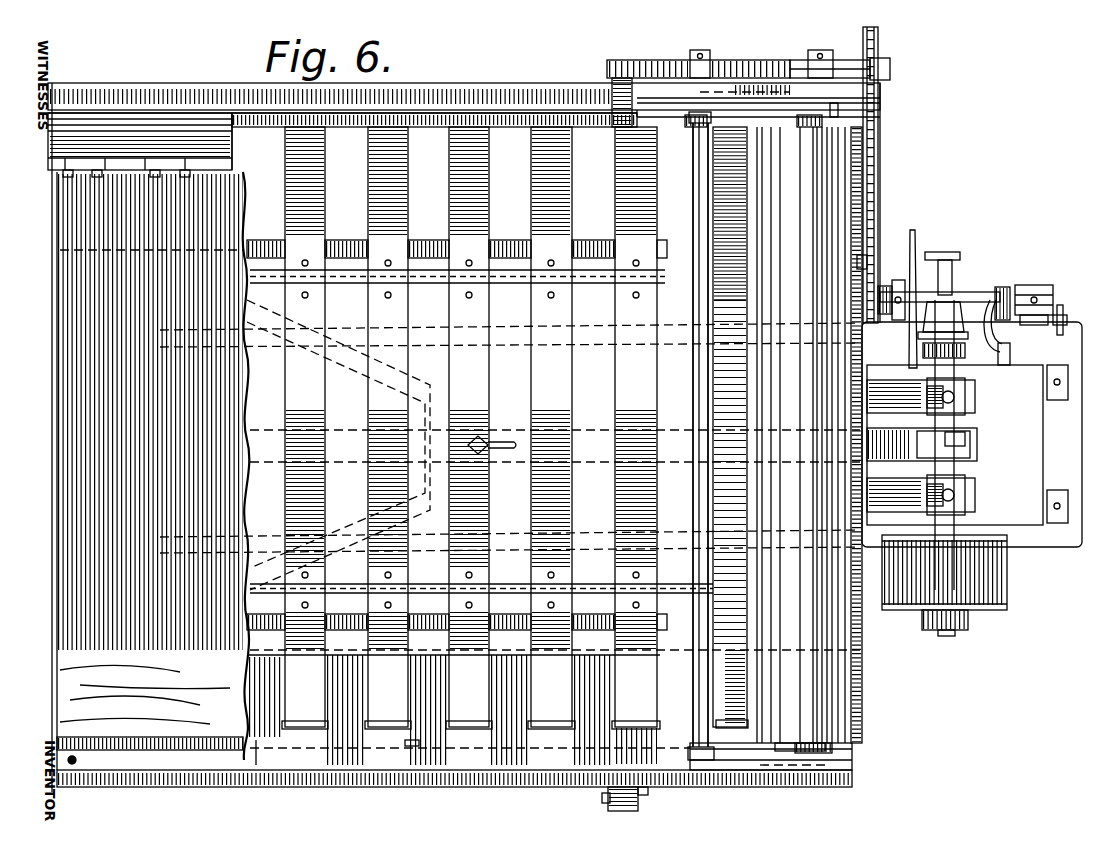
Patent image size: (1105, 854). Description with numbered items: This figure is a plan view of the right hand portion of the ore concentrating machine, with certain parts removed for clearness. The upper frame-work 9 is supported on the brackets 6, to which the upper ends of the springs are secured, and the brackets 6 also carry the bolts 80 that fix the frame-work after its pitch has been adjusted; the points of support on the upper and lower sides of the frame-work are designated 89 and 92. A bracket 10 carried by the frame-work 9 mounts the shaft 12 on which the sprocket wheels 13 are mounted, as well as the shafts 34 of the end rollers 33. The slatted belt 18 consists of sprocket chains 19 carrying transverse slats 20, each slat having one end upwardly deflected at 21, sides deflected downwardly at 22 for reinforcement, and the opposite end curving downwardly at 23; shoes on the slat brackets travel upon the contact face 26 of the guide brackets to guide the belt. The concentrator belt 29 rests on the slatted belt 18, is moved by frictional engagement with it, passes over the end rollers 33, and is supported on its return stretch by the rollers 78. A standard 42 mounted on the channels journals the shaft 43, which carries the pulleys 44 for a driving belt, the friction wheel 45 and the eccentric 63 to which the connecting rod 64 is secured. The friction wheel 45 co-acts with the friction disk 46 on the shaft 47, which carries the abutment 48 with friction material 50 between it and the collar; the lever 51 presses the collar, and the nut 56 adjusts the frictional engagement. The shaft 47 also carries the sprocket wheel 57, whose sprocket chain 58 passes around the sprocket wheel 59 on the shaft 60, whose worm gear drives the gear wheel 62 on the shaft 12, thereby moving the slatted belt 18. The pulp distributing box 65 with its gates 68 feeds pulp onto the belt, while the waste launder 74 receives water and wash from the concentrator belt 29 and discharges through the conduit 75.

The brackets 6 is at (540, 776).
The upper frame-work 9 is at (617, 118).
The bracket 10 is at (835, 117).
The shaft 12 is at (690, 149).
The sprocket wheels 13 is at (745, 276).
The slatted belt 18 is at (512, 427).
The sprocket chains 19 is at (577, 324).
The slats 20 is at (428, 427).
The upwardly deflected end 21 is at (310, 163).
The downwardly deflected sides 22 is at (456, 705).
The downwardly curved end 23 is at (750, 696).
The contact face 26 is at (338, 246).
The concentrator belt 29 is at (70, 384).
The end rollers 33 is at (807, 435).
The shafts 34 is at (790, 745).
The standard 42 is at (1062, 500).
The shaft 43 is at (965, 619).
The pulleys 44 is at (1005, 586).
The friction wheel 45 is at (925, 347).
The friction disk 46 is at (913, 235).
The shaft 47 is at (963, 293).
The abutment 48 is at (1012, 298).
The friction material 50 is at (1011, 283).
The lever 51 is at (990, 346).
The nut 56 is at (1061, 311).
The sprocket wheel 57 is at (860, 262).
The sprocket chain 58 is at (862, 159).
The sprocket wheel 59 is at (879, 31).
The shaft 60 is at (800, 66).
The gear wheel 62 is at (636, 54).
The eccentric 63 is at (975, 446).
The connecting rod 64 is at (689, 429).
The pulp distributing box 65 is at (110, 150).
The gates 68 is at (62, 178).
The waste launder 74 is at (280, 749).
The conduit 75 is at (75, 756).
The rollers 78 is at (415, 745).
The bolts 80 is at (607, 802).
The point of support 89 is at (605, 80).
The point of support 92 is at (651, 796).